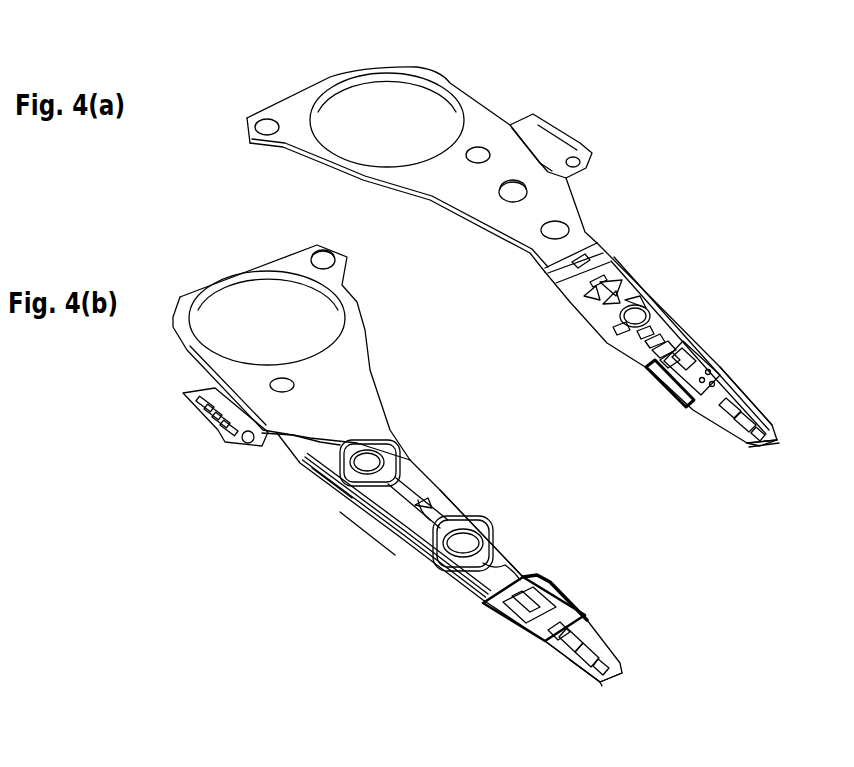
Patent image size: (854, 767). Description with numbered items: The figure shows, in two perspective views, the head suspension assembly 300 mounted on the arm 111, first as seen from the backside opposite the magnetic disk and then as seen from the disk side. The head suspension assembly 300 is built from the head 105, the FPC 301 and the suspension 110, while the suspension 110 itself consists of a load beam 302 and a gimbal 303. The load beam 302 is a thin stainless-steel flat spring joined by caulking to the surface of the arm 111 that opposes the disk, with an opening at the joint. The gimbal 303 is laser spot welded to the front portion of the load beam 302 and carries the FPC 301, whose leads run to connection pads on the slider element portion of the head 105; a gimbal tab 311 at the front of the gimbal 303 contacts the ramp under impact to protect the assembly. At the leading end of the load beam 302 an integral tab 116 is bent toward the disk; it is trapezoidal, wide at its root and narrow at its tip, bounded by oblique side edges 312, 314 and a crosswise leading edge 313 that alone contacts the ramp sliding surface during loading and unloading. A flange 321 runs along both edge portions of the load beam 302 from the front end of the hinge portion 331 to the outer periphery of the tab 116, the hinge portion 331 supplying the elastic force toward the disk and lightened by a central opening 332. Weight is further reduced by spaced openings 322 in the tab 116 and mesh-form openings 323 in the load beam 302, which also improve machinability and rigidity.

In FIG. 4B, the head 105 is at (533, 607).
In FIG. 4A, the suspension 110 is at (680, 302).
In FIG. 4B, the suspension 110 is at (548, 557).
In FIG. 4A, the arm 111 is at (450, 87).
In FIG. 4B, the arm 111 is at (291, 352).
In FIG. 4A, the tab 116 is at (757, 447).
In FIG. 4B, the tab 116 is at (563, 655).
In FIG. 4A, the head suspension assembly 300 is at (718, 330).
In FIG. 4B, the head suspension assembly 300 is at (503, 522).
In FIG. 4A, the FPC 301 is at (582, 170).
In FIG. 4B, the FPC 301 is at (278, 440).
In FIG. 4A, the load beam 302 is at (597, 318).
In FIG. 4B, the load beam 302 is at (470, 512).
In FIG. 4A, the gimbal 303 is at (695, 407).
In FIG. 4B, the gimbal 303 is at (478, 595).
In FIG. 4A, the gimbal tab 311 is at (692, 368).
In FIG. 4B, the gimbal tab 311 is at (567, 628).
In FIG. 4A, the edge 312 is at (737, 433).
In FIG. 4B, the edge 312 is at (618, 663).
In FIG. 4A, the edge 313 is at (762, 445).
In FIG. 4B, the edge 313 is at (618, 682).
In FIG. 4A, the edge 314 is at (773, 418).
In FIG. 4B, the edge 314 is at (585, 677).
In FIG. 4A, the flange 321 is at (628, 263).
In FIG. 4B, the flange 321 is at (400, 527).
In FIG. 4A, the openings 322 is at (753, 400).
In FIG. 4B, the openings 322 is at (605, 647).
In FIG. 4A, the openings 323 is at (643, 343).
In FIG. 4A, the hinge portion 331 is at (568, 270).
In FIG. 4B, the hinge portion 331 is at (382, 495).
In FIG. 4A, the opening 332 is at (587, 257).